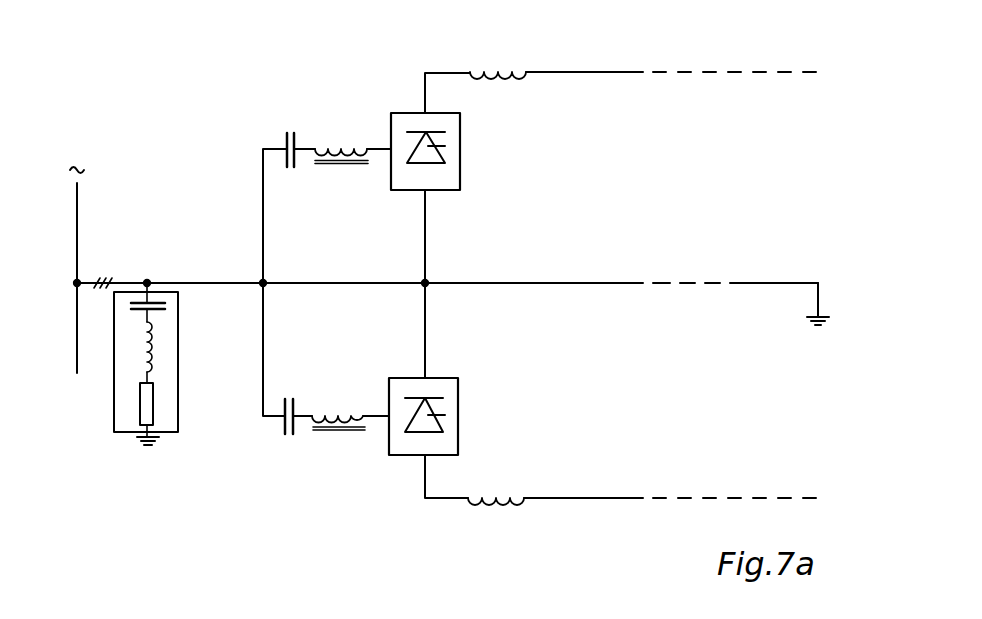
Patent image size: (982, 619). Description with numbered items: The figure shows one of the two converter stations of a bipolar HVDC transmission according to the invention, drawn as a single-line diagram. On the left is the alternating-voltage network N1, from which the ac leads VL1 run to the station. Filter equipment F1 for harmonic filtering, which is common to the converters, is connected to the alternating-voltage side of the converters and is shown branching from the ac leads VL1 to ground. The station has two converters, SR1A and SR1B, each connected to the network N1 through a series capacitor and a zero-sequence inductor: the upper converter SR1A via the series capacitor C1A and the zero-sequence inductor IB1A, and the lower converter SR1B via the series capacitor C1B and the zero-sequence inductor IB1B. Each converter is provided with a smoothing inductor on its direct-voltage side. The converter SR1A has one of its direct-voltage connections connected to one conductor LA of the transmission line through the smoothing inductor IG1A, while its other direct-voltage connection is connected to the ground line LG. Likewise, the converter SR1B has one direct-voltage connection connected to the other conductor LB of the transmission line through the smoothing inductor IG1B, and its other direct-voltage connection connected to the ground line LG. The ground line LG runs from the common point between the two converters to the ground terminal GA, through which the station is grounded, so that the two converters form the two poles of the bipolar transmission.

The ac leads VL1 is at (227, 263).
The three-phase electric ac power network N1 is at (77, 340).
The filter equipment F1 is at (114, 403).
The series capacitor C1A is at (289, 127).
The zero-sequence inductor IB1A is at (335, 140).
The converter SR1A is at (460, 148).
The smoothing inductor IG1A is at (497, 65).
The conductor of the transmission line LA is at (703, 72).
The ground line LG is at (687, 283).
The ground terminal GA is at (807, 317).
The series capacitor C1B is at (290, 440).
The zero-sequence inductor IB1B is at (342, 412).
The converter SR1B is at (458, 420).
The smoothing inductor IG1B is at (498, 510).
The conductor of the transmission line LB is at (708, 497).